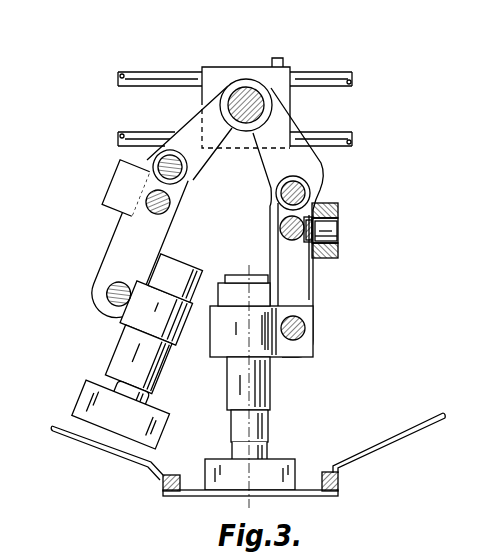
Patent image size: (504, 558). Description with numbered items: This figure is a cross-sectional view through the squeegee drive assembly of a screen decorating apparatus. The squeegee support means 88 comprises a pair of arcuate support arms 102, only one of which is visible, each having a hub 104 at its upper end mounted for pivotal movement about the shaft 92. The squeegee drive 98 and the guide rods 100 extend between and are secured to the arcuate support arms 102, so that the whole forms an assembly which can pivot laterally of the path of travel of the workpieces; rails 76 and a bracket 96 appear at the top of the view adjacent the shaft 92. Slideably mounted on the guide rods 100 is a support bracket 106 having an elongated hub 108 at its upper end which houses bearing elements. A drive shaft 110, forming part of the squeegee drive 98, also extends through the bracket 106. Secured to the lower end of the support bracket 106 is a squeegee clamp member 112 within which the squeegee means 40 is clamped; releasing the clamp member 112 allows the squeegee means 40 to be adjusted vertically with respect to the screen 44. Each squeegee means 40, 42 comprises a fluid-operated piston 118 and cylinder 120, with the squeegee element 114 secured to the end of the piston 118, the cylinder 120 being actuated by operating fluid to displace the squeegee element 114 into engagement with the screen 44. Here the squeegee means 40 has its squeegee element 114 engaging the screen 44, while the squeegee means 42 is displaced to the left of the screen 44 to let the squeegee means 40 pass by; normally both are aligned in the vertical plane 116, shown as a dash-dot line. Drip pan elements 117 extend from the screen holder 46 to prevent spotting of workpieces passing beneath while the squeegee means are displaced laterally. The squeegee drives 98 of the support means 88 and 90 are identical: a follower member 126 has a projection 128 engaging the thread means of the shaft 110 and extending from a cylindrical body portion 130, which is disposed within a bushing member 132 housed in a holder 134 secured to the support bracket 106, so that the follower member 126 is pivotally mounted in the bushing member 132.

The squeegee means 40 is at (265, 380).
The squeegee means 42 is at (132, 350).
The screen 44 is at (313, 495).
The screen holder 46 is at (340, 478).
The guide rails 76 is at (352, 80).
The squeegee support means 88 is at (266, 192).
The squeegee support means 90 is at (233, 224).
The shaft 92 is at (283, 105).
The bracket 96 is at (243, 66).
The squeegee drive 98 is at (380, 237).
The guide rods 100 is at (154, 161).
The arcuate support arms 102 is at (186, 122).
The hub 104 is at (268, 100).
The support bracket 106 is at (320, 282).
The elongated hub 108 is at (278, 193).
The drive shaft 110 is at (172, 206).
The squeegee clamp member 112 is at (219, 348).
The squeegee element 114 is at (82, 400).
The vertical plane 116 is at (250, 425).
The drip pan elements 117 is at (80, 442).
The piston 118 is at (265, 450).
The cylinder 120 is at (275, 365).
The follower member 126 is at (346, 233).
The projection 128 is at (306, 242).
The cylindrical body portion 130 is at (340, 226).
The bushing member 132 is at (340, 208).
The holder 134 is at (333, 258).